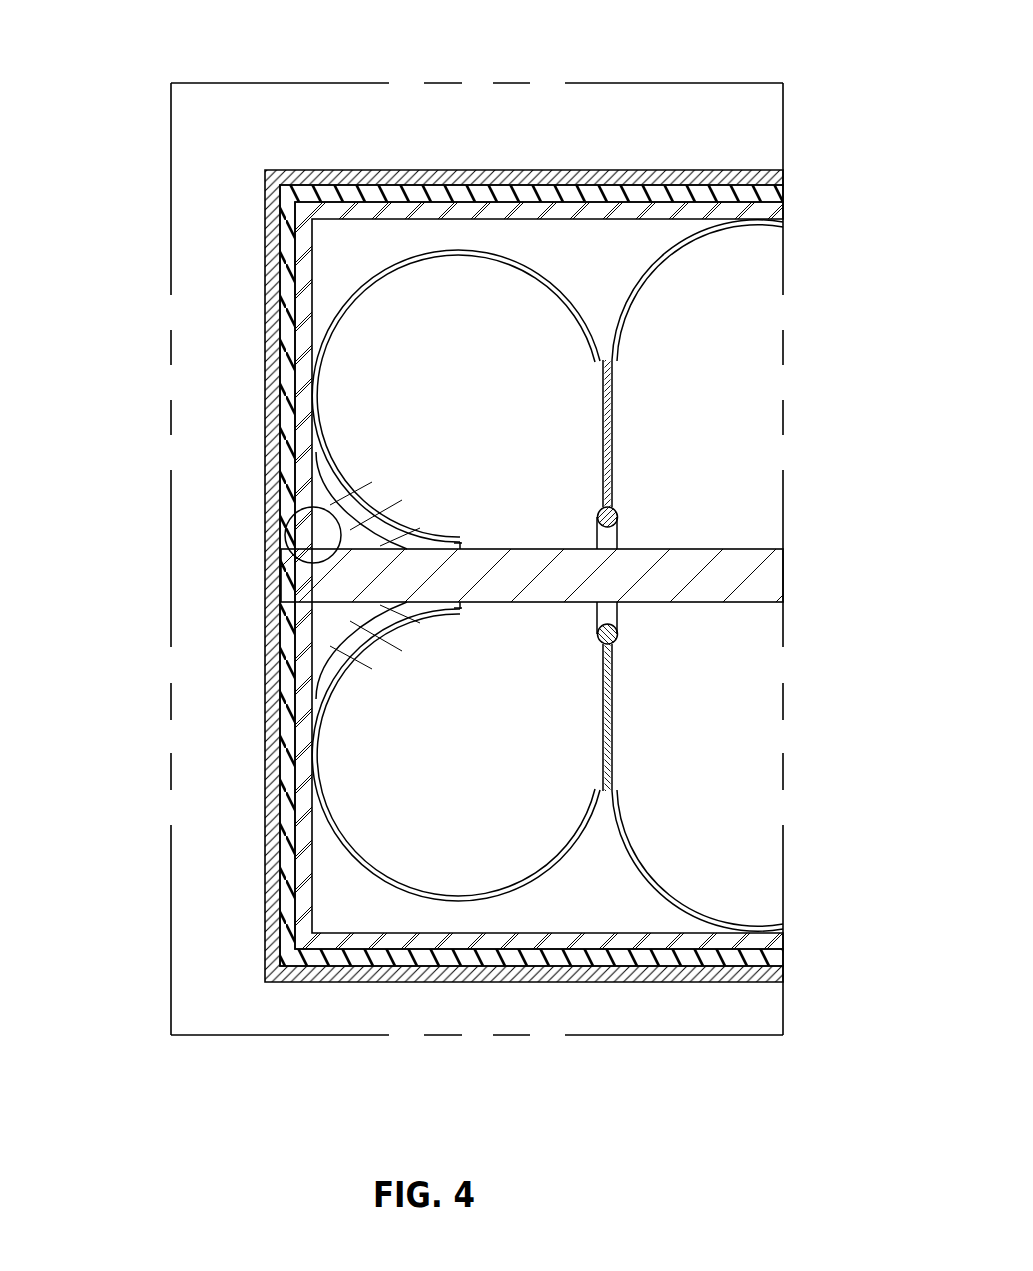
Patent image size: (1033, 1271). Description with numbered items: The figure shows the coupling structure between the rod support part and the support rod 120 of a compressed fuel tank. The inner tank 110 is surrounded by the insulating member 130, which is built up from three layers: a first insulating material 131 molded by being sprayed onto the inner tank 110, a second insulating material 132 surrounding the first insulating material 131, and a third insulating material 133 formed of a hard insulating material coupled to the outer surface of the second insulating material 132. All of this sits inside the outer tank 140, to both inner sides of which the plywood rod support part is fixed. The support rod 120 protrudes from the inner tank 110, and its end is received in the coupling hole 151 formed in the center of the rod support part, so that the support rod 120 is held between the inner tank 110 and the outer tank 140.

The inner tank 110 is at (661, 262).
The support rod 120 is at (313, 577).
The insulating member 130 is at (531, 662).
The first insulating material 131 is at (597, 898).
The second insulating material 132 is at (473, 942).
The third insulating material 133 is at (537, 960).
The outer tank 140 is at (276, 347).
The coupling hole 151 is at (313, 505).